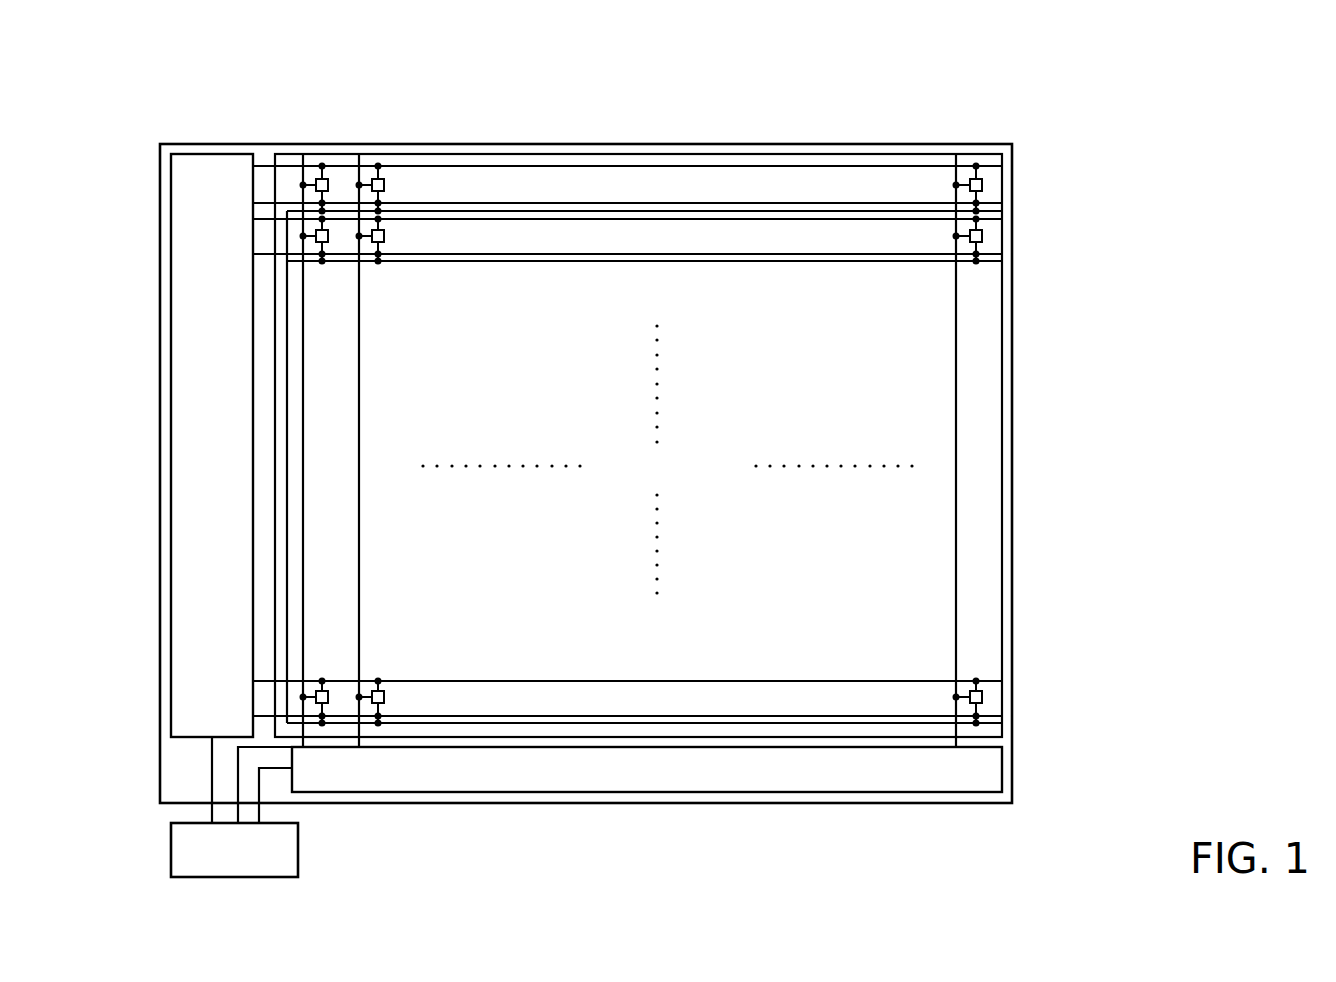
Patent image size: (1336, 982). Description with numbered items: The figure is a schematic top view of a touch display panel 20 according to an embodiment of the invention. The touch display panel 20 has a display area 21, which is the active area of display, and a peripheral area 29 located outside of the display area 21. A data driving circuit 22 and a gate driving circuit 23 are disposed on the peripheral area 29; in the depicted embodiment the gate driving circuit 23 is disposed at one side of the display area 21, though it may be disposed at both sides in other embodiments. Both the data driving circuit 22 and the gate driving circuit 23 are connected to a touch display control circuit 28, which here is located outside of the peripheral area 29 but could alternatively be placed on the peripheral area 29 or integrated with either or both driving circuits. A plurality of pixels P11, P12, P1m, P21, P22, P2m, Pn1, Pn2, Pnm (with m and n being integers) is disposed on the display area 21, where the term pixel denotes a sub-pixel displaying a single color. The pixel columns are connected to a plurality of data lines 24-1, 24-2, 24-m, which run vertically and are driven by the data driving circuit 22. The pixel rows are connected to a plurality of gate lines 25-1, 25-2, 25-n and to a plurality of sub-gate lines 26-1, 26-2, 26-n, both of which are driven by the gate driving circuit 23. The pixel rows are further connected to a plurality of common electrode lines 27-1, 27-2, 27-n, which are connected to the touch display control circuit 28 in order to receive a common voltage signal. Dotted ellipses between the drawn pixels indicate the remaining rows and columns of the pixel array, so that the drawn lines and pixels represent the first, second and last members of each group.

The touch display panel 20 is at (1064, 68).
The display area 21 is at (1002, 208).
The data driving circuit 22 is at (1002, 770).
The gate driving circuit 23 is at (212, 153).
The data line 24-1 is at (303, 352).
The data line 24-2 is at (359, 402).
The data line 24-m is at (956, 445).
The gate line 25-1 is at (478, 166).
The gate line 25-2 is at (695, 219).
The gate line 25-n is at (478, 681).
The sub-gate line 26-1 is at (530, 203).
The sub-gate line 26-2 is at (755, 254).
The sub-gate line 26-n is at (528, 716).
The common electrode line 27-1 is at (570, 211).
The common electrode line 27-2 is at (805, 261).
The common electrode line 27-n is at (568, 723).
The touch display control circuit 28 is at (171, 845).
The peripheral area 29 is at (173, 770).
The pixel P11 is at (327, 178).
The pixel P12 is at (383, 178).
The pixel P1m is at (982, 185).
The pixel P21 is at (328, 228).
The pixel P22 is at (383, 228).
The pixel P2m is at (982, 236).
The pixel Pn1 is at (326, 690).
The pixel Pn2 is at (383, 690).
The pixel Pnm is at (982, 697).